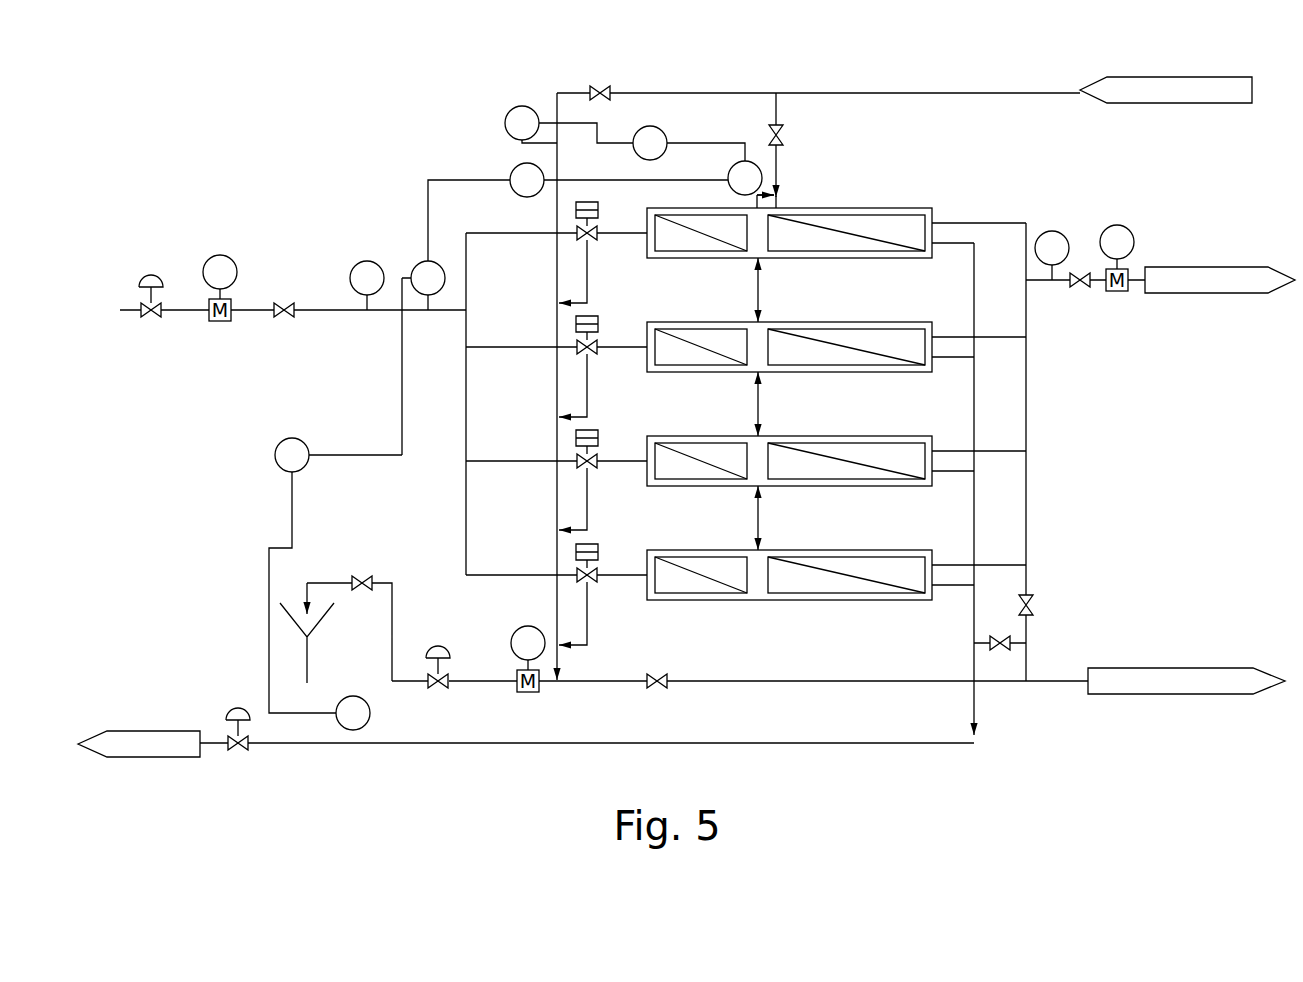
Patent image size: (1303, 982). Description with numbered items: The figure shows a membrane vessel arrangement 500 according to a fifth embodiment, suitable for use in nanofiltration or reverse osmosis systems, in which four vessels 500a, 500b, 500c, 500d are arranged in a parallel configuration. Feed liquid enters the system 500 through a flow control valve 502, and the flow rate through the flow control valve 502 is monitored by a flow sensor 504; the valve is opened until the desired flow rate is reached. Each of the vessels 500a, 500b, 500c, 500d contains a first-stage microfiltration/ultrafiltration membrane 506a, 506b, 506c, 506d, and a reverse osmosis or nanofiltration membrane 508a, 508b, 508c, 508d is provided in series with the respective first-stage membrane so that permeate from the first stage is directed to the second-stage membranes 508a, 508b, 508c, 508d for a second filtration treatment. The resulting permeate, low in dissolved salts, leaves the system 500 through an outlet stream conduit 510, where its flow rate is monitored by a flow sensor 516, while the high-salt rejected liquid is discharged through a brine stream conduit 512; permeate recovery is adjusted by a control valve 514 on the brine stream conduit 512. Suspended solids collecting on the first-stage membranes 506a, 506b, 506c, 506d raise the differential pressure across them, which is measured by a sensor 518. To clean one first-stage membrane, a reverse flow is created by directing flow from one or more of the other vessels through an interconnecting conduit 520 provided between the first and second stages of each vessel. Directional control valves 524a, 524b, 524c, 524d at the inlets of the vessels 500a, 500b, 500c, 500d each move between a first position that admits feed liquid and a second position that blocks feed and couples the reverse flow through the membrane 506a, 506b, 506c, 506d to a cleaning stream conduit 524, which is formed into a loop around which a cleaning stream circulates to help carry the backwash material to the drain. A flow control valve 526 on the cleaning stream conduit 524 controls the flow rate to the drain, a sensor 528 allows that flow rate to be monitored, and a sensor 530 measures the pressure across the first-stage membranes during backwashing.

The membrane vessel arrangement 500 is at (353, 141).
The flow control valve 502 is at (154, 266).
The flow sensor 504 is at (236, 250).
The vessel 500a is at (939, 198).
The vessel 500b is at (946, 333).
The vessel 500c is at (946, 446).
The vessel 500d is at (946, 559).
The MF/UF membrane 506a is at (710, 235).
The MF/UF membrane 506b is at (710, 349).
The MF/UF membrane 506c is at (710, 463).
The MF/UF membrane 506d is at (708, 577).
The RO/NF membrane 508a is at (848, 228).
The RO/NF membrane 508b is at (853, 345).
The RO/NF membrane 508c is at (855, 459).
The RO/NF membrane 508d is at (853, 572).
The outlet stream conduit 510 is at (1200, 267).
The brine stream conduit 512 is at (394, 747).
The control valve 514 is at (229, 708).
The flow sensor 516 is at (1119, 229).
The sensor 518 is at (509, 167).
The interconnecting conduit 520 is at (762, 518).
The cleaning stream conduit 524 is at (562, 656).
The directional control valve 524a is at (578, 241).
The directional control valve 524b is at (578, 355).
The directional control valve 524c is at (578, 469).
The directional control valve 524d is at (578, 583).
The flow control valve 526 is at (436, 645).
The sensor 528 is at (519, 697).
The sensor 530 is at (763, 167).